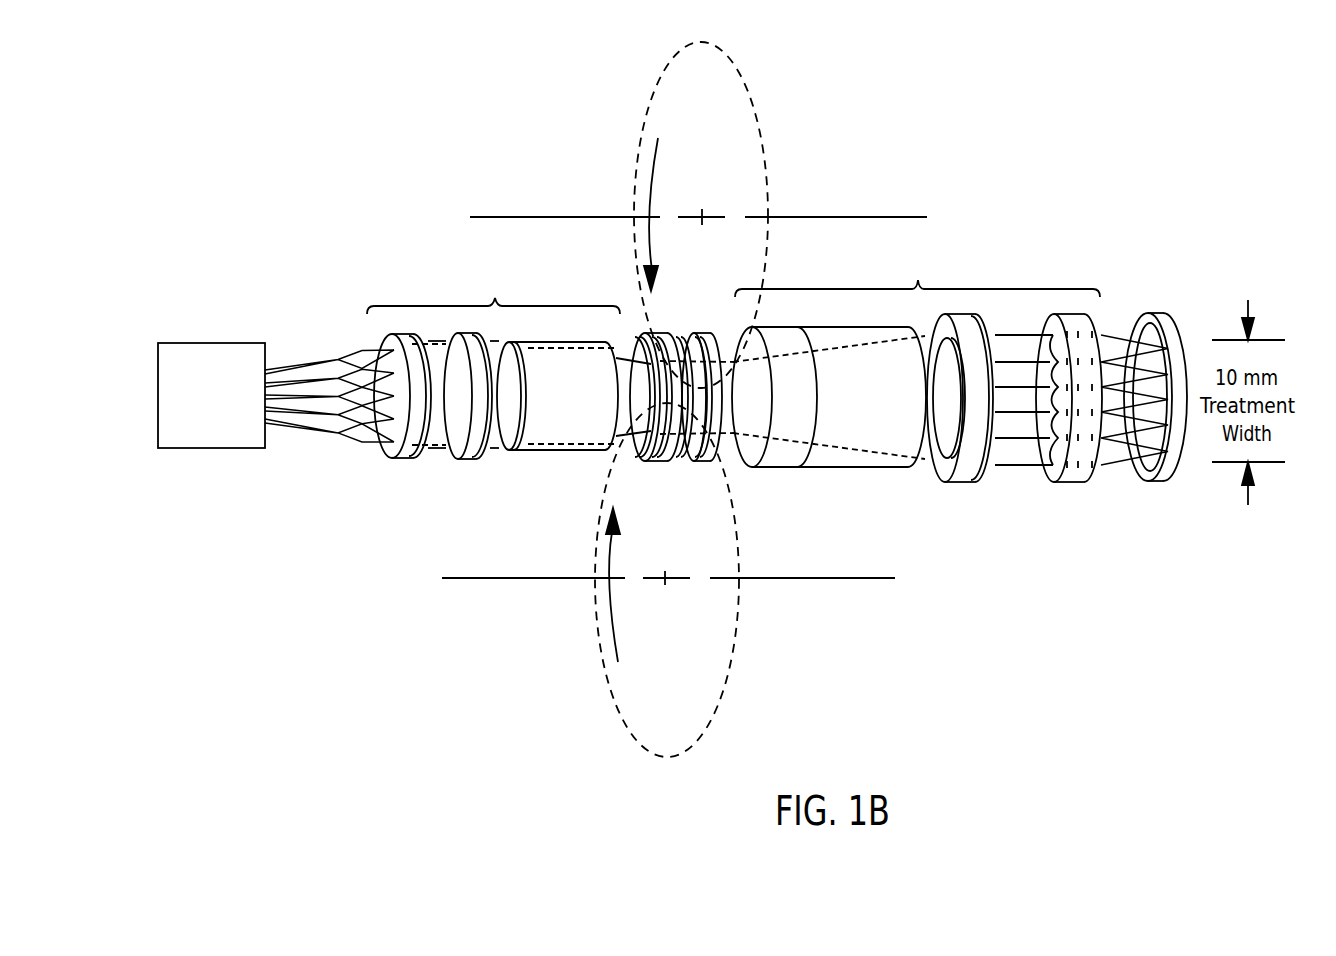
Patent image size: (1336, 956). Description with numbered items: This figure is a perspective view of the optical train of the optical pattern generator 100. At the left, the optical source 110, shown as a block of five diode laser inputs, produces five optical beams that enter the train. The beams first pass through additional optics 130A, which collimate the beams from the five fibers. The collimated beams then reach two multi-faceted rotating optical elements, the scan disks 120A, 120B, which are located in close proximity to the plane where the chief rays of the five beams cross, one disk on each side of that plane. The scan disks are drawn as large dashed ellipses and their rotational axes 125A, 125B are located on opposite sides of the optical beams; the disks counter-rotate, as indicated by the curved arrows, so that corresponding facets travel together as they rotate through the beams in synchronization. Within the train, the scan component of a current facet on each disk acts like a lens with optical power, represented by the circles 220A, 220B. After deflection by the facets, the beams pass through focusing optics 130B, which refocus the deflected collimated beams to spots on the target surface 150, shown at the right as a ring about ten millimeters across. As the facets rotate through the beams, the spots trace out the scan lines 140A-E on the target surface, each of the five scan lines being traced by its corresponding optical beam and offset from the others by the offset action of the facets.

The optical pattern generator 100 is at (318, 131).
The optical source 110 is at (210, 343).
The scan disk 120A is at (604, 665).
The scan disk 120B is at (640, 141).
The rotational axis 125A is at (640, 582).
The rotational axis 125B is at (676, 219).
The additional optics 130A is at (509, 363).
The focusing optics 130B is at (917, 369).
The scan lines 140A-E is at (1155, 351).
The target surface 150 is at (1155, 485).
The circle 220A is at (663, 461).
The circle 220B is at (707, 328).